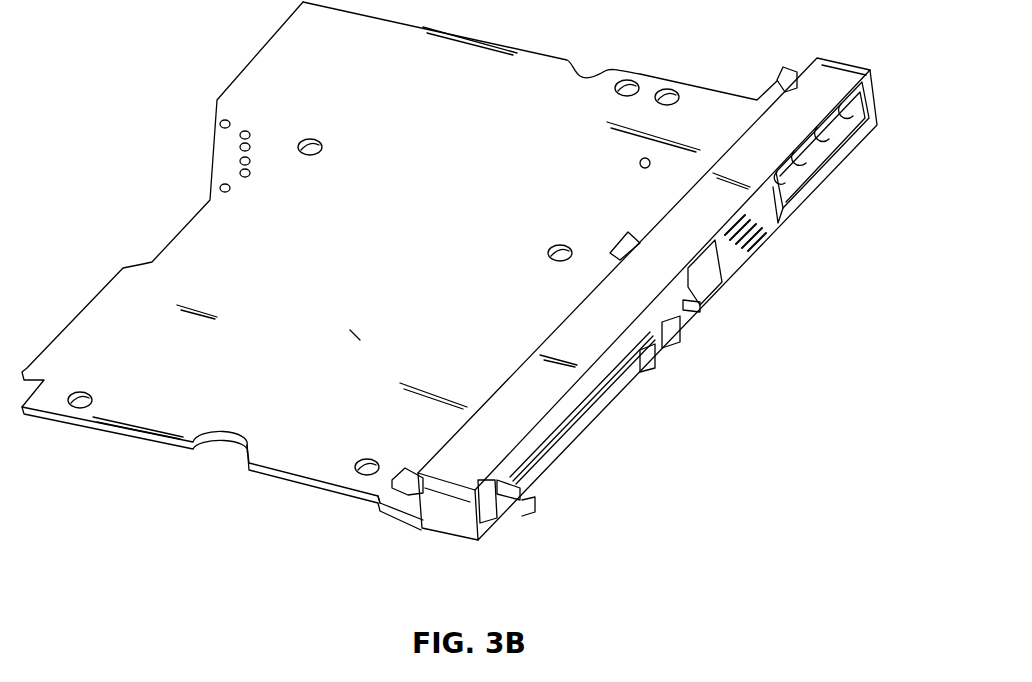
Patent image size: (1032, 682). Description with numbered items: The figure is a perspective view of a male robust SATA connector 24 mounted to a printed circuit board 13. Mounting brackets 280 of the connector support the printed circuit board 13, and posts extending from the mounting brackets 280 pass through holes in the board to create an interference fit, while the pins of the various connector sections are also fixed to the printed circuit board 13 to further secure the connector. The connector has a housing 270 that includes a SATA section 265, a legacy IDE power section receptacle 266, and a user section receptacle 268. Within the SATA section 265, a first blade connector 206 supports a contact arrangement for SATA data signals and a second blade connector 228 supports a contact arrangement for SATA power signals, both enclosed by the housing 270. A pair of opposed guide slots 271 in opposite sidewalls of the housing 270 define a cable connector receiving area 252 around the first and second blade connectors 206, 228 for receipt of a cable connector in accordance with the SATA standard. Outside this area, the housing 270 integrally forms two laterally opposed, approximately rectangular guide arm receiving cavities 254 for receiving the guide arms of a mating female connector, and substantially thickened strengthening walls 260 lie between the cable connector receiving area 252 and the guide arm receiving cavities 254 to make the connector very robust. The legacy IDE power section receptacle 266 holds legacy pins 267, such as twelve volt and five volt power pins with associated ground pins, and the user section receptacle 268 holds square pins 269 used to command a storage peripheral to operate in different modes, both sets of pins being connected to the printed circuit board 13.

The printed circuit board 13 is at (485, 55).
The male robust SATA connector 24 is at (852, 50).
The first blade connector 206 is at (652, 356).
The second blade connector 228 is at (582, 419).
The cable connector receiving area 252 is at (637, 376).
The guide arm receiving cavities 254 is at (707, 285).
The strengthening walls 260 is at (692, 302).
The SATA section 265 is at (545, 188).
The legacy IDE power section receptacle 266 is at (830, 147).
The legacy pins 267 is at (822, 160).
The user section receptacle 268 is at (762, 230).
The square pins 269 is at (765, 245).
The housing 270 is at (436, 514).
The guide slots 271 is at (672, 341).
The mounting brackets 280 is at (785, 72).